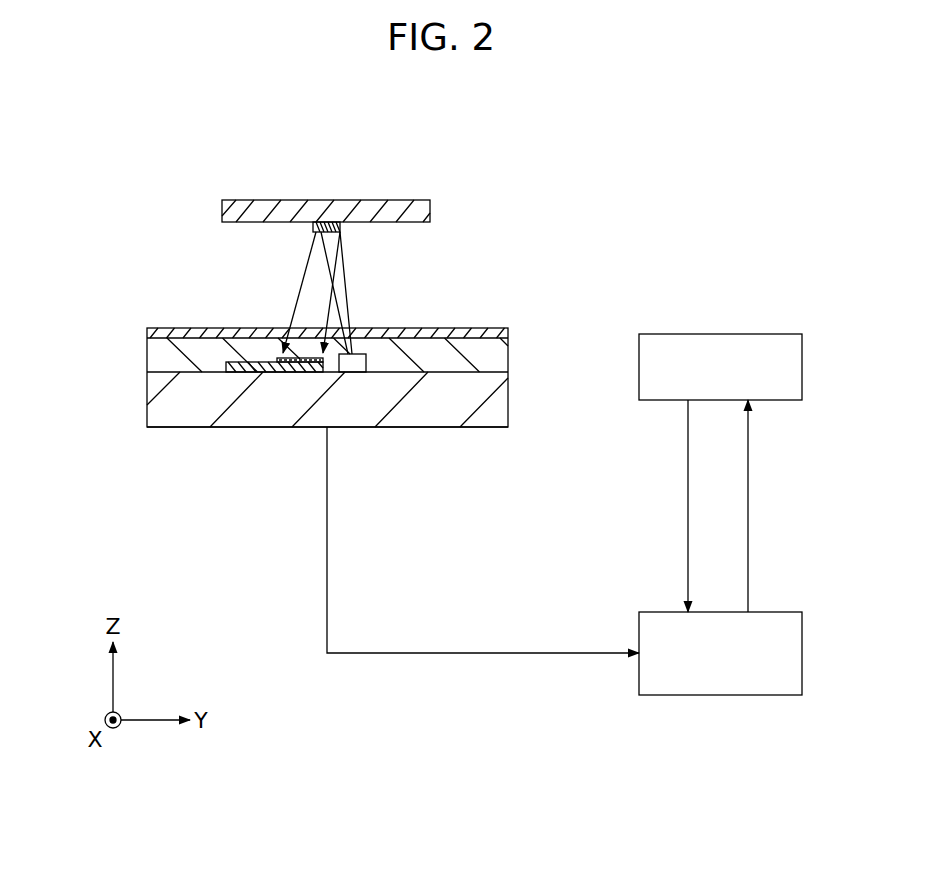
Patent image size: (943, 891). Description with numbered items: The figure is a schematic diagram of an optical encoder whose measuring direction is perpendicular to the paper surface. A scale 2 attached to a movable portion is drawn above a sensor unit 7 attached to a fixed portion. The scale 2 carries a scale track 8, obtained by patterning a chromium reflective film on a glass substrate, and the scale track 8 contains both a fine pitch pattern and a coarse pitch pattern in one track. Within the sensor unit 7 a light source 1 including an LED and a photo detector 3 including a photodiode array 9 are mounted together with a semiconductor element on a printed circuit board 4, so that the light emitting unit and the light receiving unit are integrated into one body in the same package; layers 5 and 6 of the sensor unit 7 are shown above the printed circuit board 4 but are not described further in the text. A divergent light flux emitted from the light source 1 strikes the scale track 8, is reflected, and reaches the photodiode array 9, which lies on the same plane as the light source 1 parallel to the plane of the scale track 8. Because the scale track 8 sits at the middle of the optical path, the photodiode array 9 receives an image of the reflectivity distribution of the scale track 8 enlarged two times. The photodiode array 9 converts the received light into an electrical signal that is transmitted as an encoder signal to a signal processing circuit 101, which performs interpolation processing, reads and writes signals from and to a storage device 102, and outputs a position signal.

The light source 1 is at (352, 372).
The scale 2 is at (430, 212).
The photo detector 3 is at (237, 372).
The printed circuit board 4 is at (500, 396).
The intermediate layer 5 is at (500, 357).
The protective layer 6 is at (500, 335).
The sensor unit 7 is at (147, 358).
The scale track 8 is at (340, 226).
The photodiode array 9 is at (293, 362).
The signal processing circuit 101 is at (772, 612).
The storage device 102 is at (766, 334).